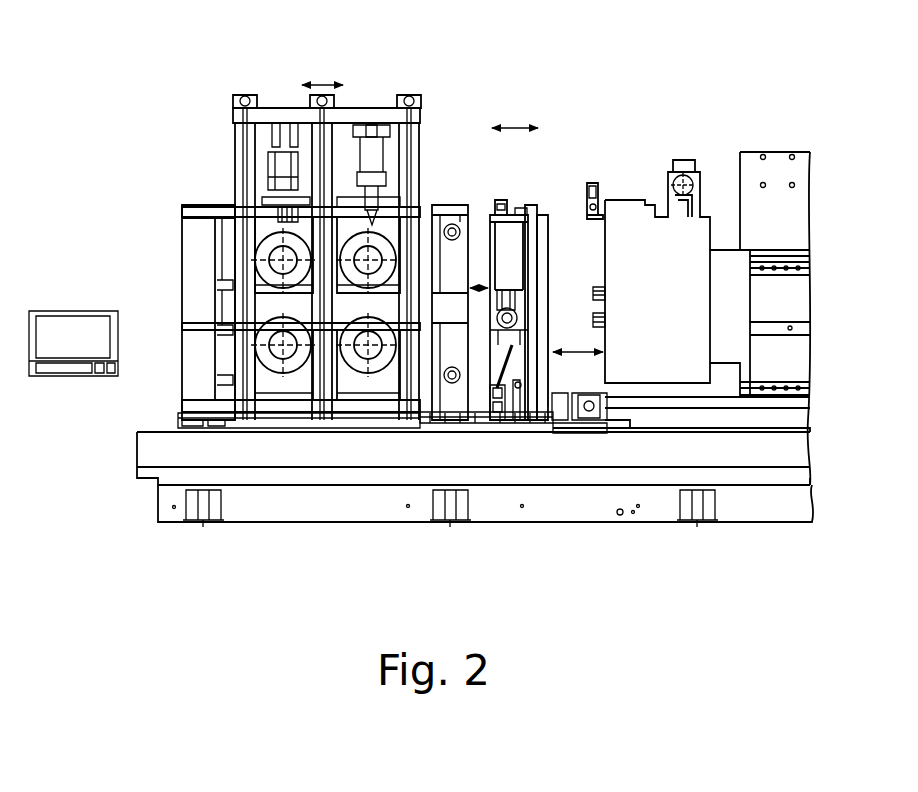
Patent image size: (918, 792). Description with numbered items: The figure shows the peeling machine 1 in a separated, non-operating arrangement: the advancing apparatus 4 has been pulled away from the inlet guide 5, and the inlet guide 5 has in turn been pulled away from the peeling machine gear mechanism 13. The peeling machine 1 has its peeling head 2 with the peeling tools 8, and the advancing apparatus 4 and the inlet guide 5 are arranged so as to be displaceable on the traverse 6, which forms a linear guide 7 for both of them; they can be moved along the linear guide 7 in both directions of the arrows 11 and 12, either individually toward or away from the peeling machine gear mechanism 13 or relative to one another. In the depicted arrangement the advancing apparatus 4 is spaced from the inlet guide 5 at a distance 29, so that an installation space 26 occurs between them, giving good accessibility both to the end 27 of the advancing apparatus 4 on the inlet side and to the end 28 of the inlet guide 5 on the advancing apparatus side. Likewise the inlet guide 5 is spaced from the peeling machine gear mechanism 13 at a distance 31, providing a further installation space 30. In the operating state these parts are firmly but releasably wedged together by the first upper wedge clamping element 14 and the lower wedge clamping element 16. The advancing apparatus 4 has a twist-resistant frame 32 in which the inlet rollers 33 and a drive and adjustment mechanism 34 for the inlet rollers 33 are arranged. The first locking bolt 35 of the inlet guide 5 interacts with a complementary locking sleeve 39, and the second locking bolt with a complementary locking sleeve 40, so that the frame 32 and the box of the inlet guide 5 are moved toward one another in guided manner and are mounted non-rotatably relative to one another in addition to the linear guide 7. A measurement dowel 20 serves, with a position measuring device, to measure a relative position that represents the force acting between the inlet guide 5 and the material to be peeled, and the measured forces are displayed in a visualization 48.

The peeling machine 1 is at (146, 50).
The peeling head 2 is at (607, 253).
The advancing apparatus 4 is at (237, 163).
The inlet guide 5 is at (557, 208).
The traverse 6 is at (135, 452).
The linear guide 7 is at (170, 423).
The peeling tools 8 is at (605, 292).
The arrow 11 is at (326, 80).
The arrow 12 is at (508, 126).
The peeling machine gear mechanism 13 is at (739, 126).
The first upper wedge clamping element 14 is at (497, 204).
The lower wedge clamping element 16 is at (483, 395).
The measurement dowel 20 is at (577, 400).
The installation space 26 is at (473, 233).
The end of the advancing apparatus on the inlet side 27 is at (476, 400).
The end of the inlet guide on the advancing apparatus side 28 is at (485, 274).
The distance 29 is at (482, 292).
The further installation space 30 is at (591, 263).
The distance 31 is at (586, 345).
The frame 32 is at (193, 205).
The inlet rollers 33 is at (267, 252).
The drive and adjustment mechanism 34 is at (373, 98).
The first locking bolt 35 is at (521, 207).
The locking sleeve 39 is at (462, 205).
The locking sleeve 40 is at (470, 360).
The visualization 48 is at (75, 330).